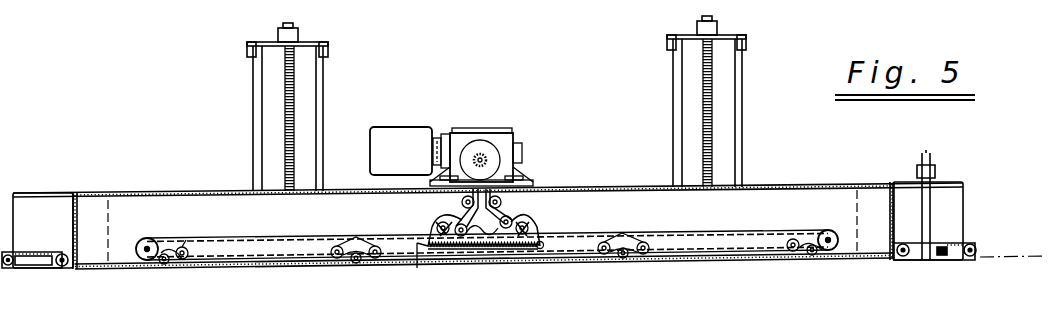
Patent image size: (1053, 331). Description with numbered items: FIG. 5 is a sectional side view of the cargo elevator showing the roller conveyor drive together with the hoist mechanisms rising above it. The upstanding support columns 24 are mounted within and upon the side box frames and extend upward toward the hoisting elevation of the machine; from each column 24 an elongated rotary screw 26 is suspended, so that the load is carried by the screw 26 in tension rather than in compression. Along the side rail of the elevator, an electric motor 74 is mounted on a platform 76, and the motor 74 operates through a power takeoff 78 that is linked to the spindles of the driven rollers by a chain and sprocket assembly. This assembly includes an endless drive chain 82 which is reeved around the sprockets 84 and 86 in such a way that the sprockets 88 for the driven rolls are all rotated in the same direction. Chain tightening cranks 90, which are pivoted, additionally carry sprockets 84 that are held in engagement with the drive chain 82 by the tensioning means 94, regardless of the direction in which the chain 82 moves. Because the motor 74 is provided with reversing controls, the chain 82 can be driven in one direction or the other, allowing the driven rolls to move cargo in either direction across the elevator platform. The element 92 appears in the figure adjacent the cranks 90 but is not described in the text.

The support column 24 is at (253, 123).
The rotary screw 26 is at (294, 116).
The electric motor 74 is at (410, 158).
The platform 76 is at (535, 180).
The power takeoff 78 is at (508, 140).
The endless drive chain 82 is at (588, 232).
The sprocket 84 is at (184, 247).
The sprocket 86 is at (144, 238).
The driven roll sprocket 88 is at (163, 264).
The chain tightening crank 90 is at (438, 219).
The slide block 92 is at (436, 226).
The tensioning means 94 is at (482, 273).